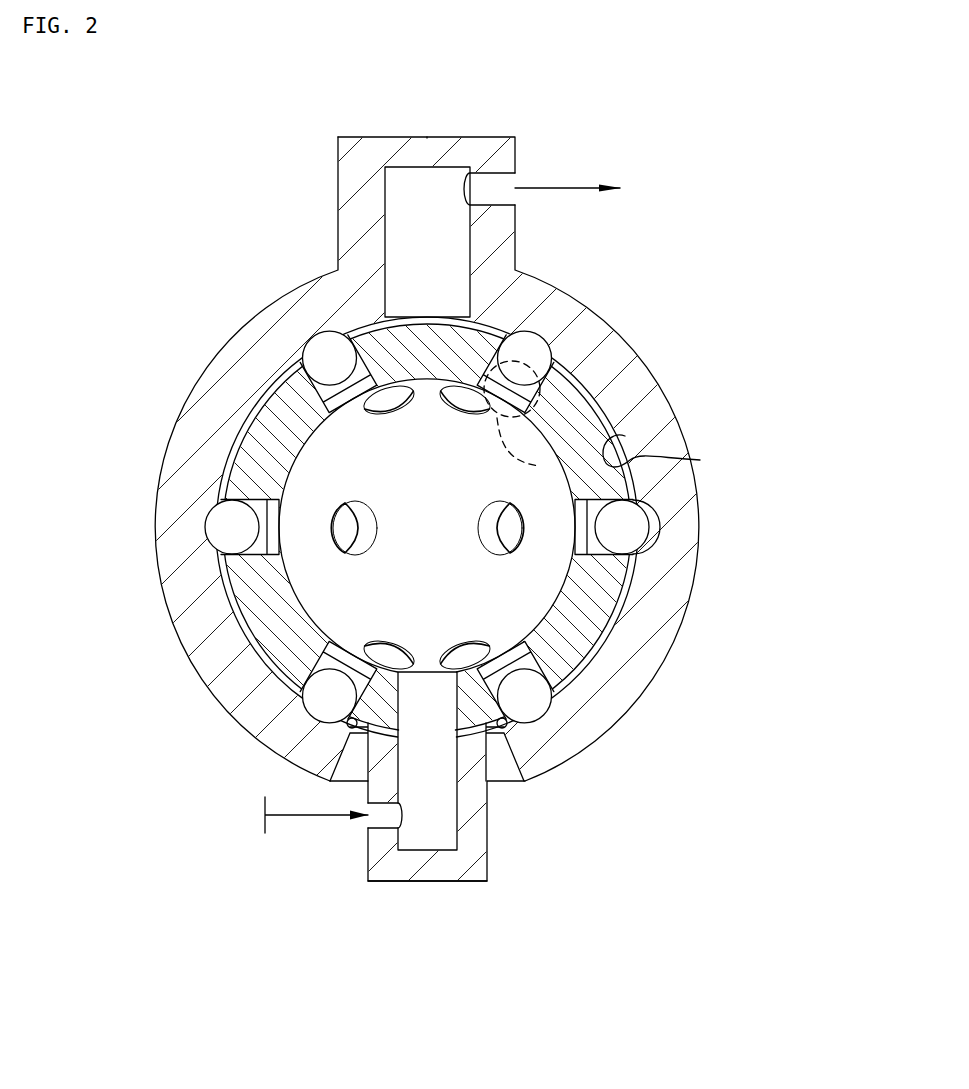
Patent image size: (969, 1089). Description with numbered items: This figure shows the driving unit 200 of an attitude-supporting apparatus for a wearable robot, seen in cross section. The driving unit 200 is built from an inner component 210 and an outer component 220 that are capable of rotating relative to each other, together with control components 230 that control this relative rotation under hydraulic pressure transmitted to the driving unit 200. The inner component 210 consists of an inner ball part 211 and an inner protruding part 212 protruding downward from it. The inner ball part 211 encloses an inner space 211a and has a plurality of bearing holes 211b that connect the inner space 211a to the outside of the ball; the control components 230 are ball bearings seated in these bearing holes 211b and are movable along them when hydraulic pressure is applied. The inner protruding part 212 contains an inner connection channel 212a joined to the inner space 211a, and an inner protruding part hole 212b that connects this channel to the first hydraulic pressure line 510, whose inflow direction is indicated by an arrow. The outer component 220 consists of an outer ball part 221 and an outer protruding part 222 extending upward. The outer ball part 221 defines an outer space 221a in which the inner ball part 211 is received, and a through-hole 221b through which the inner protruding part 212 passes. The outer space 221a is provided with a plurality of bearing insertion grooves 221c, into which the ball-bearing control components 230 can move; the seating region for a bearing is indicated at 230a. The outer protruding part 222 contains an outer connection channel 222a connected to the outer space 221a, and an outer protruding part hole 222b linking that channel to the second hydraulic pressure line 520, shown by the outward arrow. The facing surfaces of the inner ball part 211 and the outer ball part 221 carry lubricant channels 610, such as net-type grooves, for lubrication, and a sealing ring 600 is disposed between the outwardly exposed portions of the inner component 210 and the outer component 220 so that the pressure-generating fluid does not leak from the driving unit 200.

The driving unit 200 is at (172, 358).
The inner component 210 is at (354, 872).
The inner ball part 211 is at (590, 628).
The inner space 211a is at (335, 593).
The bearing holes 211b is at (256, 552).
The inner protruding part 212 is at (473, 856).
The inner connection channel 212a is at (430, 825).
The inner protruding part hole 212b is at (385, 818).
The outer component 220 is at (258, 304).
The outer ball part 221 is at (680, 585).
The outer space 221a is at (700, 460).
The through-hole 221b is at (498, 772).
The bearing insertion grooves 221c is at (633, 525).
The outer protruding part 222 is at (353, 163).
The outer connection channel 222a is at (428, 193).
The outer protruding part hole 222b is at (502, 183).
The control components 230 is at (332, 352).
The ball seat 230a is at (567, 450).
The first hydraulic pressure line 510 is at (320, 817).
The second hydraulic pressure line 520 is at (572, 192).
The sealing ring 600 is at (507, 726).
The lubricant channels 610 is at (256, 655).